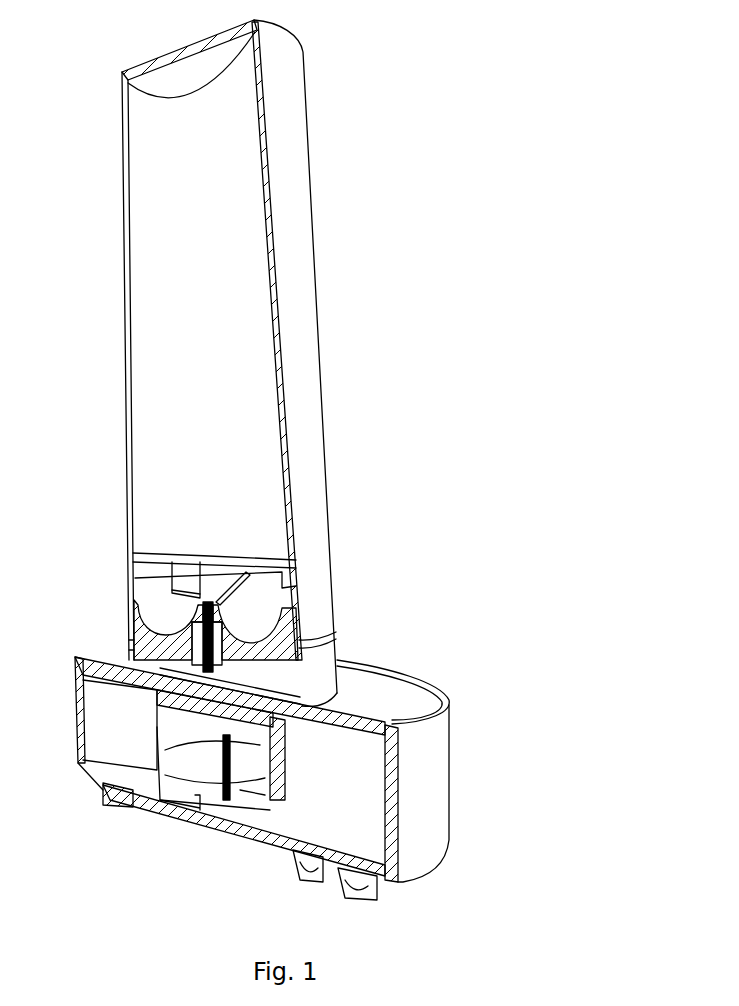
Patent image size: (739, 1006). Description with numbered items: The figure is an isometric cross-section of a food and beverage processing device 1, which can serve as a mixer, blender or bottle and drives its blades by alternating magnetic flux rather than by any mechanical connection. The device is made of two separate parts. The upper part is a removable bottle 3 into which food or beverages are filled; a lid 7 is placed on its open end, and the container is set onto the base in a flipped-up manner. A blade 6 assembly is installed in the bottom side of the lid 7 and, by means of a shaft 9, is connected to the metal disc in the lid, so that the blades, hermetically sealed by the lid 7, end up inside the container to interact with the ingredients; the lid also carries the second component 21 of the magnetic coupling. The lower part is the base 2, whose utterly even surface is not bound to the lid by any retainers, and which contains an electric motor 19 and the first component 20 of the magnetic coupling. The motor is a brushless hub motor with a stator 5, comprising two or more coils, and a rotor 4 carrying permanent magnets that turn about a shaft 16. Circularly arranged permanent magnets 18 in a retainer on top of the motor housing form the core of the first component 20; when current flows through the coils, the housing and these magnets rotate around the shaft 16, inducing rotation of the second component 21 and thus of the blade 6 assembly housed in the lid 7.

The food and beverage processing device 1 is at (350, 642).
The base 2 is at (453, 706).
The bottle 3 is at (332, 518).
The rotor 4 is at (283, 798).
The stator 5 is at (183, 820).
The blade 6 is at (215, 580).
The lid 7 is at (130, 627).
The shaft 9 is at (243, 648).
The shaft 16 is at (172, 752).
The permanent magnets 18 is at (300, 703).
The electric motor 19 is at (103, 787).
The first component of the magnetic coupling 20 is at (280, 763).
The second component of the magnetic coupling 21 is at (148, 685).